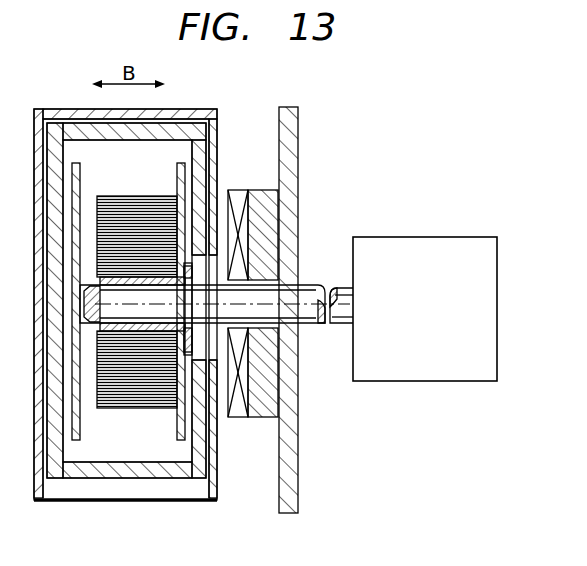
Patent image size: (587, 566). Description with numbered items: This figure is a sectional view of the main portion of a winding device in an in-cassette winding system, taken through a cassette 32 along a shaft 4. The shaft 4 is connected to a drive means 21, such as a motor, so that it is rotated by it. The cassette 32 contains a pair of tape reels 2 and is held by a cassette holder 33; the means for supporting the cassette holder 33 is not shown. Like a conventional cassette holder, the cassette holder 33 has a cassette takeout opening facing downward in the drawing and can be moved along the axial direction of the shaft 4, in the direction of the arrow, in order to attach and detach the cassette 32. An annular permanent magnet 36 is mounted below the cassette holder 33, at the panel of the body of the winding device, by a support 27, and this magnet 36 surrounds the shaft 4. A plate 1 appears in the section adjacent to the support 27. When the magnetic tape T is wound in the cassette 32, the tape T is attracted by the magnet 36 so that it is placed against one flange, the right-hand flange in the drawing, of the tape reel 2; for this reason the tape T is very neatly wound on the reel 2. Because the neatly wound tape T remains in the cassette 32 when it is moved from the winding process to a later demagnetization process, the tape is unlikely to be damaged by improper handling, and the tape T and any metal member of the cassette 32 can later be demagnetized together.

The mounting plate 1 is at (297, 490).
The tape reel 2 is at (78, 430).
The shaft 4 is at (310, 286).
The drive means 21 is at (447, 237).
The support 27 is at (270, 417).
The cassette 32 is at (88, 468).
The cassette holder 33 is at (130, 508).
The annular permanent magnet 36 is at (240, 417).
The magnetic tape T is at (143, 410).